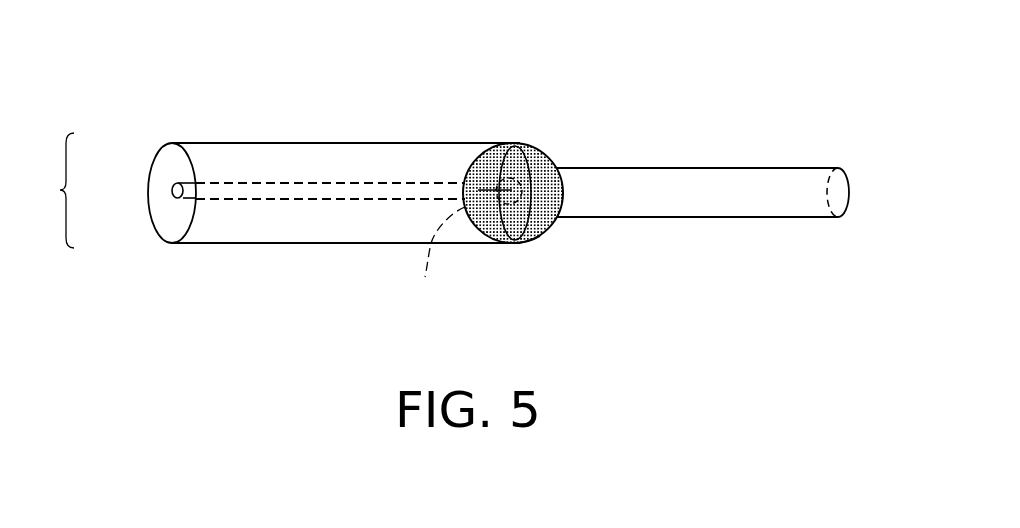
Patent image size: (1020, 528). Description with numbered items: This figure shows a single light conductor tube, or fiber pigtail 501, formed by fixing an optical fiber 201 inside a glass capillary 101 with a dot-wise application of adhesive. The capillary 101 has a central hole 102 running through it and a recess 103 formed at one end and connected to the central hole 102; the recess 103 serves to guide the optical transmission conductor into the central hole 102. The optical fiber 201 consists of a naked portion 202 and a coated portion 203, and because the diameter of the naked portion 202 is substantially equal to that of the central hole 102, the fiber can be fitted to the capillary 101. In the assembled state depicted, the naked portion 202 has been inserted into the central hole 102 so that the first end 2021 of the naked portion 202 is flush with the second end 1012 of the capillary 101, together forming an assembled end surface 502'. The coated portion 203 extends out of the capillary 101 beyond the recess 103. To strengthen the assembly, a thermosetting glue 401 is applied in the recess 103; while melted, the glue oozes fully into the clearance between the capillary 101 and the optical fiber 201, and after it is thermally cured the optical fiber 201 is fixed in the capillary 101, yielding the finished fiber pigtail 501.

The capillary 101 is at (342, 140).
The central hole 102 is at (234, 182).
The recess 103 is at (436, 260).
The optical fiber 201 is at (685, 166).
The naked portion 202 is at (307, 202).
The coated portion 203 is at (665, 205).
The thermosetting glue 401 is at (530, 240).
The fiber pigtail 501 is at (493, 126).
The assembled end surface 502' is at (41, 190).
The first end of the naked portion 2021 is at (172, 190).
The second end of the capillary 1012 is at (162, 193).